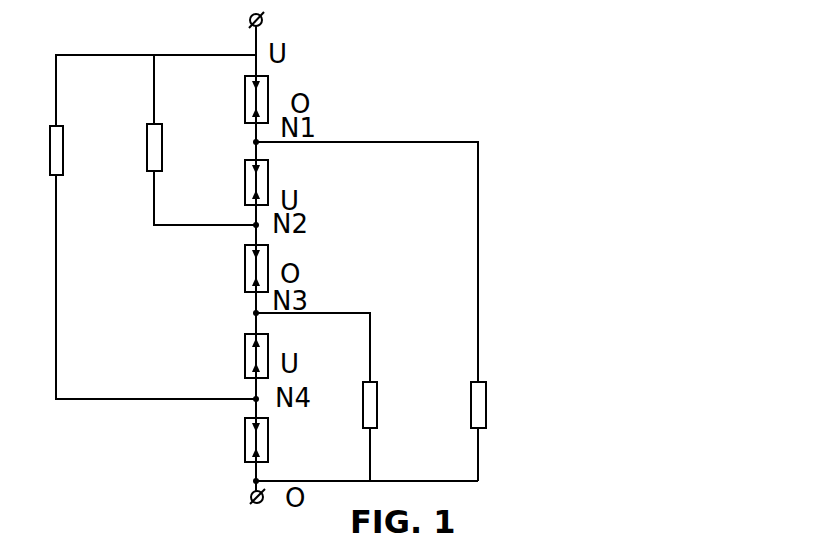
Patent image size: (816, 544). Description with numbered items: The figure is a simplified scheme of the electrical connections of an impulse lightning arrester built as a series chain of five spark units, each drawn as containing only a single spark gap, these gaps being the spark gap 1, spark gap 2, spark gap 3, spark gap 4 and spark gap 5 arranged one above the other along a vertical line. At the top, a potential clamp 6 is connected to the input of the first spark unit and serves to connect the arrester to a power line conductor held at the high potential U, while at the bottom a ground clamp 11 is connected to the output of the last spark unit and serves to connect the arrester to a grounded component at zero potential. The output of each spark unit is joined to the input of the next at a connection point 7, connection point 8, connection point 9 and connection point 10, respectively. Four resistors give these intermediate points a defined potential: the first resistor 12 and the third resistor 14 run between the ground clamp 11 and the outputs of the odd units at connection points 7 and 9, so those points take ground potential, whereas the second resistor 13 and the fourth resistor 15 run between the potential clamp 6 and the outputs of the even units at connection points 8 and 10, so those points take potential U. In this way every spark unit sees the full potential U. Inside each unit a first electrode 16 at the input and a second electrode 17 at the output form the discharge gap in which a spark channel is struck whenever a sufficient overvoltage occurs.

The spark gap 1 is at (258, 97).
The spark gap 2 is at (258, 183).
The spark gap 3 is at (258, 270).
The spark gap 4 is at (258, 352).
The spark gap 5 is at (262, 440).
The potential clamp 6 is at (264, 17).
The connection point 7 is at (254, 142).
The connection point 8 is at (254, 226).
The connection point 9 is at (254, 313).
The connection point 10 is at (254, 400).
The ground clamp 11 is at (251, 497).
The first resistor 12 is at (486, 390).
The second resistor 13 is at (147, 130).
The third resistor 14 is at (377, 396).
The fourth resistor 15 is at (50, 130).
The first electrode 16 is at (247, 80).
The second electrode 17 is at (248, 113).